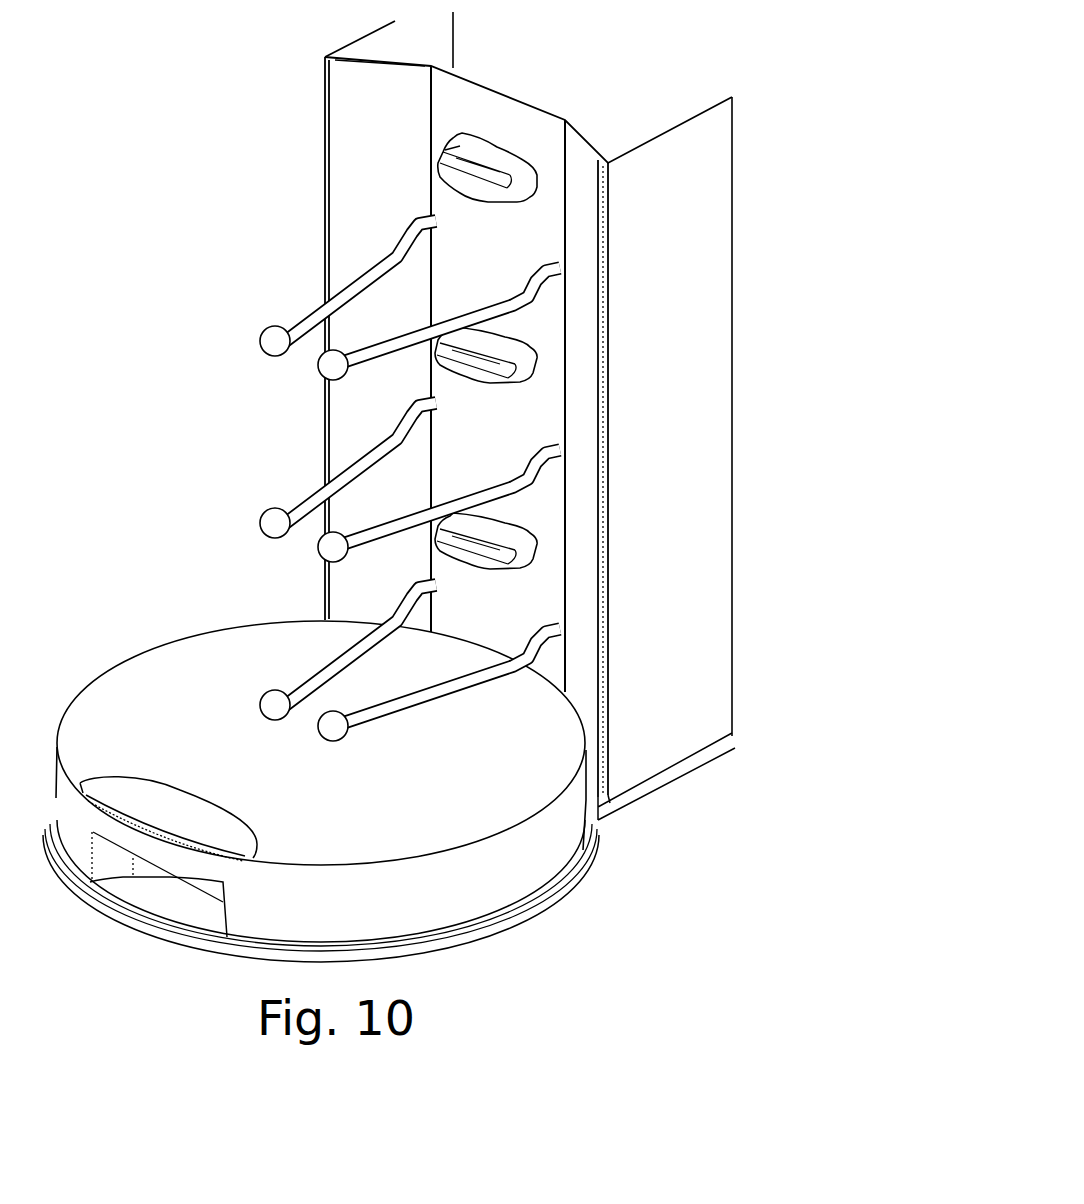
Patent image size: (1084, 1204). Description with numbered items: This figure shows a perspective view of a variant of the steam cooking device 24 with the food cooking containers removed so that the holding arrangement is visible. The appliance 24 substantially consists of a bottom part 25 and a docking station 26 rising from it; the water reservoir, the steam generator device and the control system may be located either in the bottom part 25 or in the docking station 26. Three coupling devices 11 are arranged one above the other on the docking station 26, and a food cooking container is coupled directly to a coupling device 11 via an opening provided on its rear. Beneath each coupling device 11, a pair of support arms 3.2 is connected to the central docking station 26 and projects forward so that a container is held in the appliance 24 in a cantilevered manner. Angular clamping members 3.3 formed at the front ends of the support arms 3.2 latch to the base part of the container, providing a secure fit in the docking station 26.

The coupling device 11 is at (498, 158).
The support arms 3.2 is at (303, 318).
The angular clamping members 3.3 is at (261, 343).
The cooking device 24 is at (501, 487).
The bottom part 25 is at (536, 868).
The docking station 26 is at (698, 437).